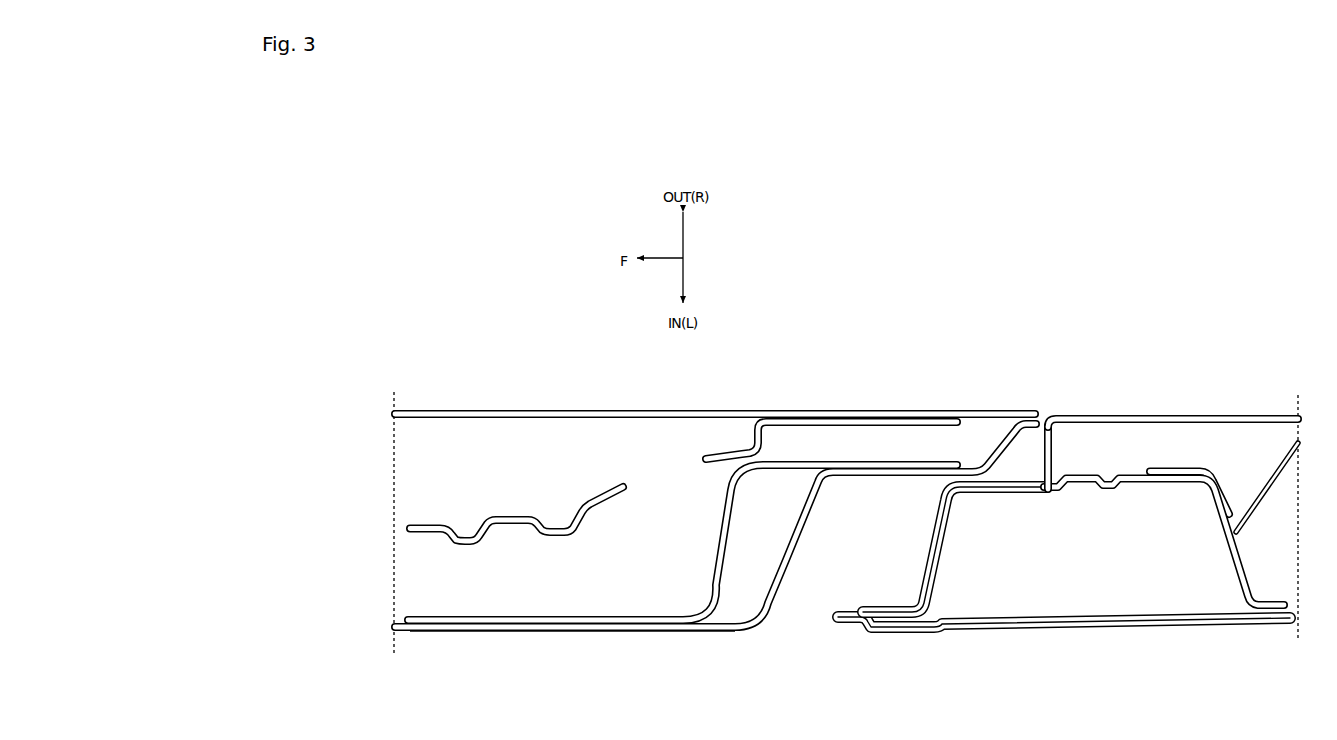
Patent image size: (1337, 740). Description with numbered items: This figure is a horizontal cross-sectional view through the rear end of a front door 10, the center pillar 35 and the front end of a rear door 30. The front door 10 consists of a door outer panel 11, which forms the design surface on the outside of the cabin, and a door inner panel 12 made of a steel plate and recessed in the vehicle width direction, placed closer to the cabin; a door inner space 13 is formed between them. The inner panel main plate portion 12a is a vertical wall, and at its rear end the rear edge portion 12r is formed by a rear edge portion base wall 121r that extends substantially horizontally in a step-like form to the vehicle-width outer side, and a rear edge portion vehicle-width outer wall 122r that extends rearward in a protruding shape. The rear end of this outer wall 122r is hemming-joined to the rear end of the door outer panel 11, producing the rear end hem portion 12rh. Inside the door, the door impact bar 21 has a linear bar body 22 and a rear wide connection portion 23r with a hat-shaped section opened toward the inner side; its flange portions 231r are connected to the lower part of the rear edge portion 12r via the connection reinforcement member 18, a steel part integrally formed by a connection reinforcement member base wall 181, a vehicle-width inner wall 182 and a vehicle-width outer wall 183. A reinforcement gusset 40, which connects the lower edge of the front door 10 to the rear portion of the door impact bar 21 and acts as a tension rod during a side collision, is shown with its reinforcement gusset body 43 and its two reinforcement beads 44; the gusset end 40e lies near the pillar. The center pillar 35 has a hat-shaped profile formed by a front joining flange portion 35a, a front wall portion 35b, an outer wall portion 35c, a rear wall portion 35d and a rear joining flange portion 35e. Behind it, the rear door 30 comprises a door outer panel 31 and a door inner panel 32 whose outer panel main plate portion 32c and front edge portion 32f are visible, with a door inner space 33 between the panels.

The front door 10 is at (726, 406).
The door outer panel 11 is at (546, 406).
The door inner panel 12 is at (565, 634).
The inner panel main plate portion 12a is at (505, 624).
The rear edge portion 12r is at (873, 479).
The rear end hem portion 12rh is at (1027, 407).
The rear edge portion base wall 121r is at (789, 557).
The rear edge portion vehicle-width outer wall 122r is at (974, 468).
The door inner space 13 is at (518, 468).
The connection reinforcement member 18 is at (613, 614).
The connection reinforcement member base wall 181 is at (711, 551).
The vehicle-width inner wall 182 is at (506, 617).
The vehicle-width outer wall 183 is at (790, 461).
The door impact bar 21 is at (699, 464).
The bar body 22 is at (711, 470).
The rear wide connection portion 23r is at (847, 428).
The flange portion 231r is at (901, 427).
The rear door 30 is at (1250, 410).
The door outer panel 31 is at (1281, 411).
The door inner panel 32 is at (1251, 629).
The outer panel main plate portion 32c is at (1293, 610).
The front edge portion 32f is at (834, 618).
The door inner space 33 is at (1258, 452).
The center pillar 35 is at (1121, 474).
The joining flange portion 35a is at (889, 622).
The front wall portion 35b is at (930, 584).
The outer wall portion 35c is at (1046, 492).
The rear wall portion 35d is at (1229, 555).
The joining flange portion 35e is at (1266, 604).
The reinforcement gusset 40 is at (422, 523).
The rear end of impact beam 40e is at (1201, 468).
The reinforcement gusset body 43 is at (591, 500).
The reinforcement bead 44 is at (463, 544).